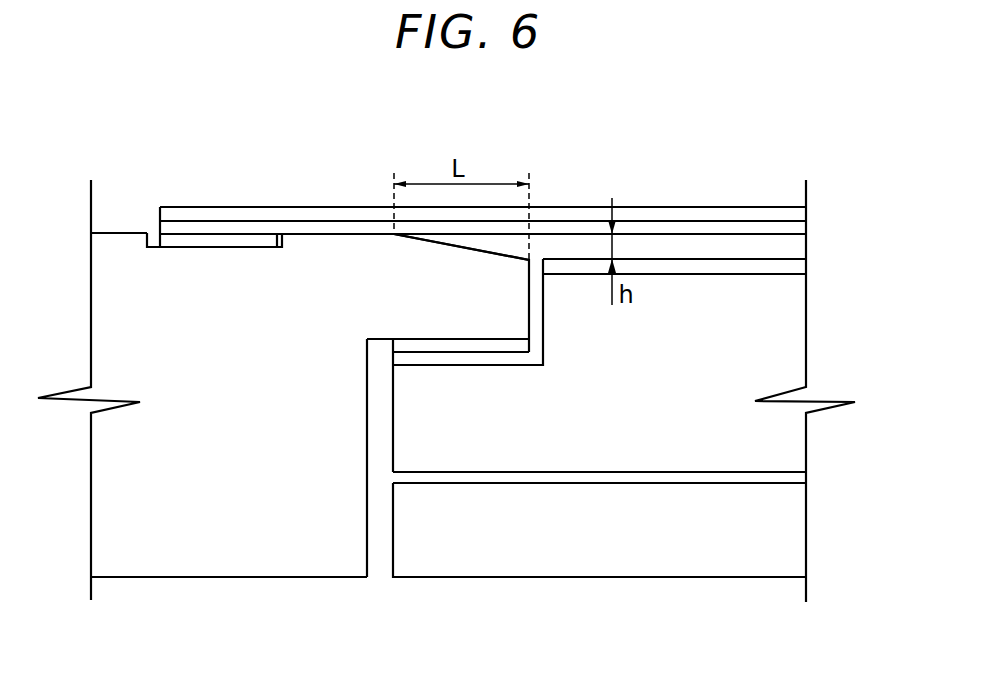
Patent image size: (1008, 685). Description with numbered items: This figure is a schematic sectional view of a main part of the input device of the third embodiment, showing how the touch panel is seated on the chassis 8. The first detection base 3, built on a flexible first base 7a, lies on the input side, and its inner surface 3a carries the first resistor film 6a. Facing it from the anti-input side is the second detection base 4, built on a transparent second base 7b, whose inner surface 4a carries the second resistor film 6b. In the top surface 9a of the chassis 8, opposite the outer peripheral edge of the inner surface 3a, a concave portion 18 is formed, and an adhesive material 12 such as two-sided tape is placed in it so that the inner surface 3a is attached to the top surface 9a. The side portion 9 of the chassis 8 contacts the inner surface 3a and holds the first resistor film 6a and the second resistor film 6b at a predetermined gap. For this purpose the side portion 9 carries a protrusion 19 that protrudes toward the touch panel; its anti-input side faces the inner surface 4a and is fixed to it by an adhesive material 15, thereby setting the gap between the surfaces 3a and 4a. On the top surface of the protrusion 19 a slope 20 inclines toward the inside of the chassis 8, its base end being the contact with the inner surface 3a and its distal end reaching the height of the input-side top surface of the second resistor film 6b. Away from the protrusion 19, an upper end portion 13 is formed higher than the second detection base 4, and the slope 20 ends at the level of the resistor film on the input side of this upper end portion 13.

The first detection base 3 is at (483, 180).
The inner surface of the first detection base 3a is at (784, 236).
The second detection base 4 is at (767, 482).
The inner surface of the second detection base 4a is at (778, 257).
The first resistor film 6a is at (758, 225).
The second resistor film 6b is at (710, 267).
The first base 7a is at (694, 215).
The second base 7b is at (795, 445).
The chassis 8 is at (260, 585).
The side portion of the chassis 9 is at (222, 410).
The top surface of the chassis 9a is at (123, 233).
The adhesive material 12 is at (247, 242).
The upper end portion 13 is at (775, 320).
The adhesive material 15 is at (448, 345).
The concave portion 18 is at (153, 240).
The protrusion 19 is at (500, 318).
The slope 20 is at (495, 252).